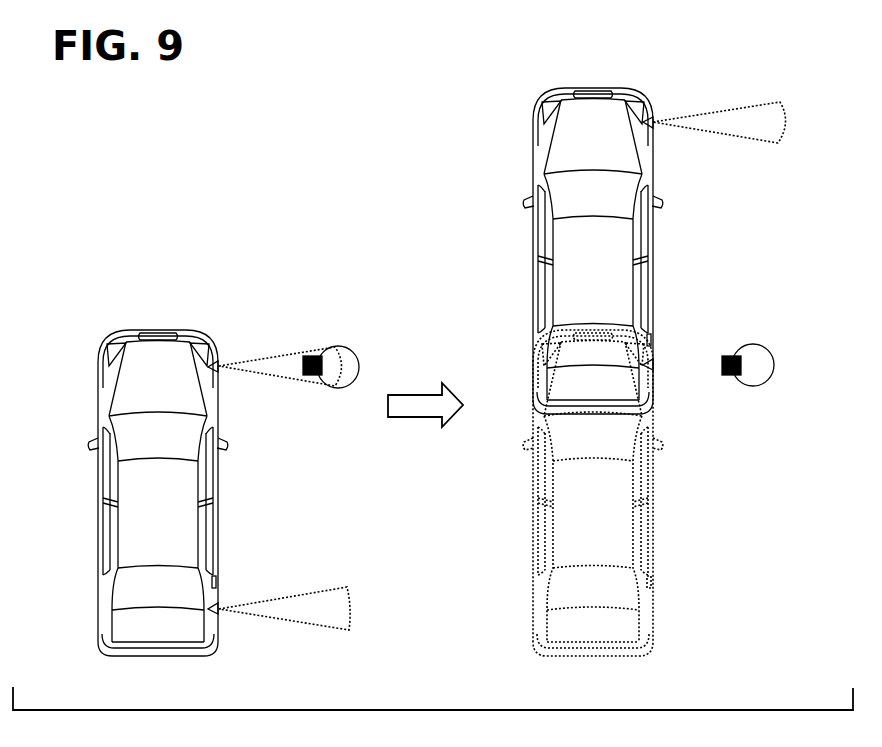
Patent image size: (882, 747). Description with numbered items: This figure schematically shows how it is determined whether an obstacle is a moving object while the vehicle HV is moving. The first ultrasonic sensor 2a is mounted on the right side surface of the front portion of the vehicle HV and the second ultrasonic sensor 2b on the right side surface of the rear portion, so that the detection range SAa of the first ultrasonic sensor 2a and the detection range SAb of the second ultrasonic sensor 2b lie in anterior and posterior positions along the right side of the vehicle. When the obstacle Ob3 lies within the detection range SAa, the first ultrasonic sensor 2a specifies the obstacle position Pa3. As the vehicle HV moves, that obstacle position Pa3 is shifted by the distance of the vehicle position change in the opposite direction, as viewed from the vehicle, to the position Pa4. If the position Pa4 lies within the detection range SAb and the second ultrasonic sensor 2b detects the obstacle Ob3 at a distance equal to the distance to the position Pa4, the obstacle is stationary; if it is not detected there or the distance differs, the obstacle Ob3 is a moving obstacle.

The vehicle HV is at (100, 522).
The first ultrasonic sensor 2a is at (220, 358).
The second ultrasonic sensor 2b is at (215, 612).
The detection range of the first ultrasonic sensor SAa is at (303, 350).
The detection range of the second ultrasonic sensor SAb is at (350, 612).
The obstacle Ob3 is at (327, 348).
The obstacle position Pa3 is at (312, 376).
The position reached by the obstacle position Pa4 is at (733, 377).